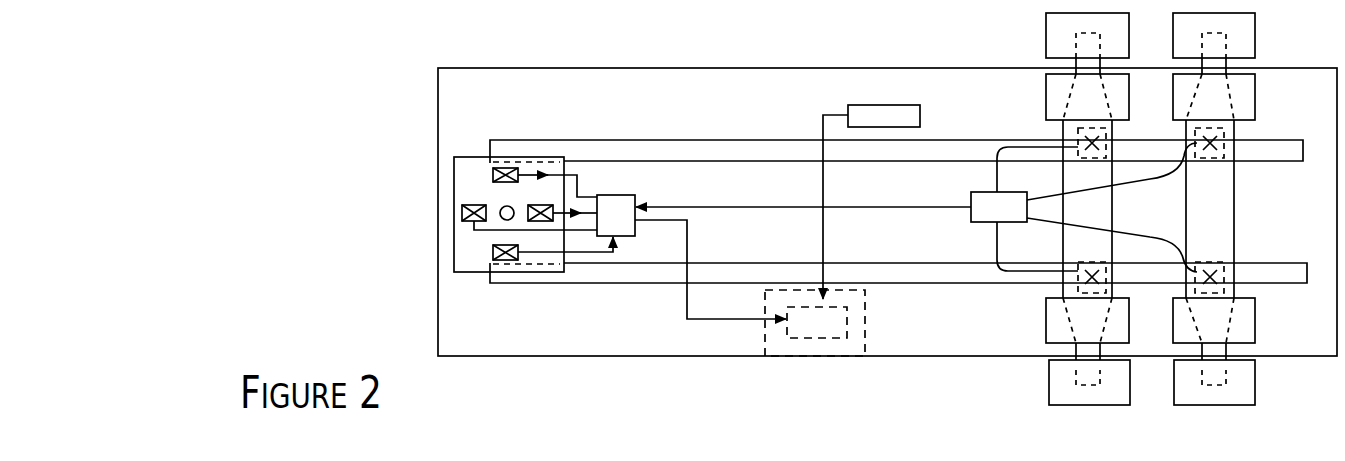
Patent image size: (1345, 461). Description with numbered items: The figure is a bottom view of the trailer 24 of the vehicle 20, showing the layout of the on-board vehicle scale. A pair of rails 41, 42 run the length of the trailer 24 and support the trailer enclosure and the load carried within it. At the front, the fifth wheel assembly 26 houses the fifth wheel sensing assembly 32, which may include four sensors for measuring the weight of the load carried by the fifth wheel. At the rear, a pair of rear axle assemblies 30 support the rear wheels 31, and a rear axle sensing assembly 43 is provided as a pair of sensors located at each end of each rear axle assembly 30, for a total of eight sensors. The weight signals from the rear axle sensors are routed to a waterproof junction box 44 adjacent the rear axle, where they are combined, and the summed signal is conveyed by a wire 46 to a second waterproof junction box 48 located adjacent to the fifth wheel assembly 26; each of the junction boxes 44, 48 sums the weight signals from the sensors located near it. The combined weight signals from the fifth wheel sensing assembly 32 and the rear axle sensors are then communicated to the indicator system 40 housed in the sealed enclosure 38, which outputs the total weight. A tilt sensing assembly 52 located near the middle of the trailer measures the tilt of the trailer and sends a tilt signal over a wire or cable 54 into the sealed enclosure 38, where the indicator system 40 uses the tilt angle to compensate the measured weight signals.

The vehicle 20 is at (300, 113).
The trailer 24 is at (583, 357).
The fifth wheel assembly 26 is at (481, 157).
The rear axle assembly 30 is at (1093, 387).
The rear wheel 31 is at (1046, 33).
The fifth wheel sensing assembly 32 is at (491, 174).
The sealed enclosure 38 is at (767, 333).
The indicator system 40 is at (812, 340).
The rail 41 is at (682, 150).
The rail 42 is at (650, 288).
The rear axle sensing assembly 43 is at (1108, 148).
The waterproof junction box 44 is at (975, 223).
The wire 46 is at (928, 206).
The second waterproof junction box 48 is at (618, 205).
The tilt sensing assembly 52 is at (888, 105).
The wire or cable 54 is at (823, 187).